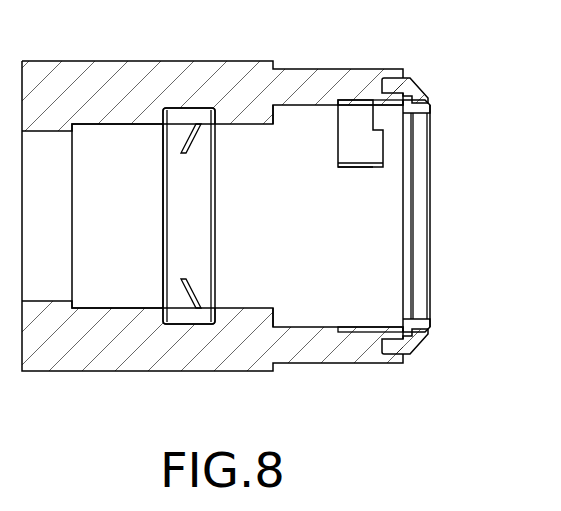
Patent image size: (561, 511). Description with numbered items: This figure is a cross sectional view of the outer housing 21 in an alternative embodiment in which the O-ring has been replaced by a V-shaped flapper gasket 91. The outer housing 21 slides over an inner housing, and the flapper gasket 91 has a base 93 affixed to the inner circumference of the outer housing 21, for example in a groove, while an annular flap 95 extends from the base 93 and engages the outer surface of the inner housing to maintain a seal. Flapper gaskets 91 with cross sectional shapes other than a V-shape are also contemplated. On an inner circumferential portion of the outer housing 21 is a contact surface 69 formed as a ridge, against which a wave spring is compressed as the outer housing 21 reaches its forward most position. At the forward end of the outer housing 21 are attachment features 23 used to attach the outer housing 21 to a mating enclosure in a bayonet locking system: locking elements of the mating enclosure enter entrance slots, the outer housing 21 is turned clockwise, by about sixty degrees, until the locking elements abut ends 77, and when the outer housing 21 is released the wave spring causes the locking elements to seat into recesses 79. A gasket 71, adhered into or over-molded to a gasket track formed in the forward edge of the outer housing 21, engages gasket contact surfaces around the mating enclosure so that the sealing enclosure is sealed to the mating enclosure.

The outer housing 21 is at (140, 372).
The attachment features 23 is at (352, 110).
The contact surface 69 is at (273, 316).
The gasket 71 is at (420, 88).
The ends 77 is at (354, 156).
The recesses 79 is at (378, 143).
The flapper gasket 91 is at (185, 202).
The base 93 is at (184, 115).
The annular flap 95 is at (190, 152).